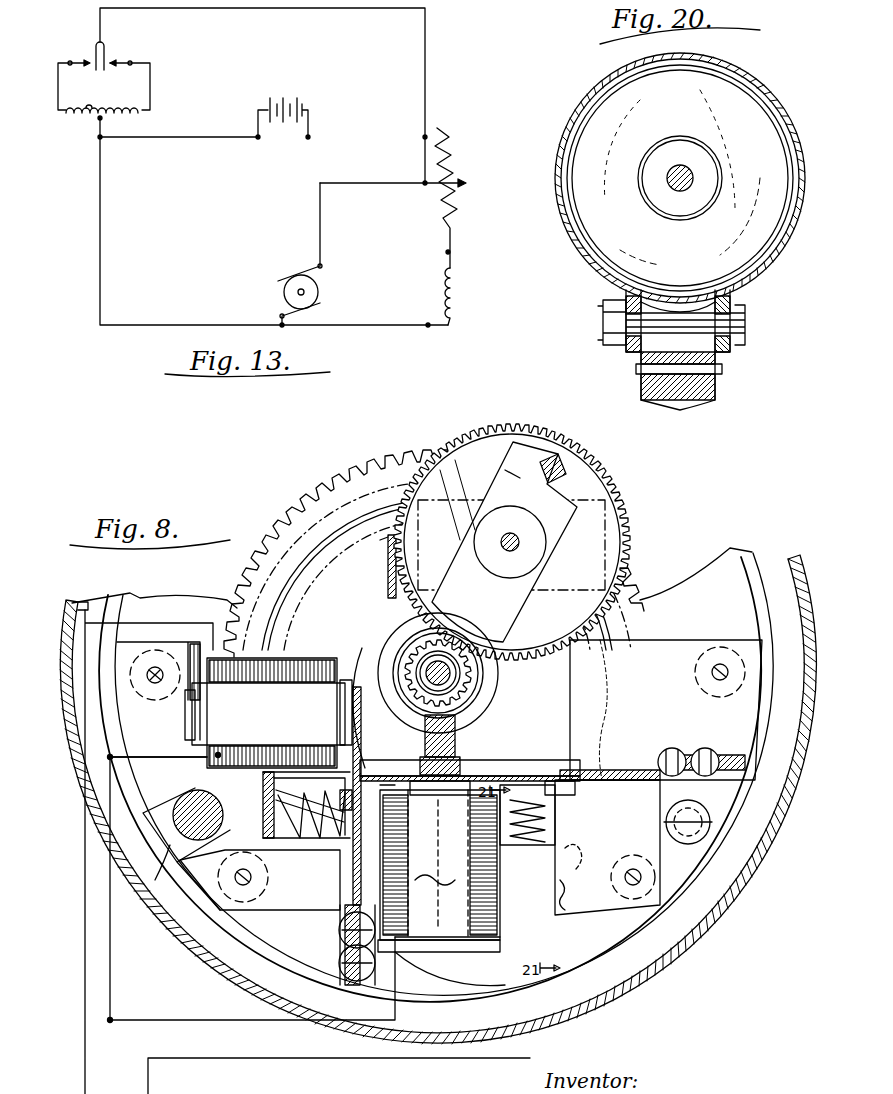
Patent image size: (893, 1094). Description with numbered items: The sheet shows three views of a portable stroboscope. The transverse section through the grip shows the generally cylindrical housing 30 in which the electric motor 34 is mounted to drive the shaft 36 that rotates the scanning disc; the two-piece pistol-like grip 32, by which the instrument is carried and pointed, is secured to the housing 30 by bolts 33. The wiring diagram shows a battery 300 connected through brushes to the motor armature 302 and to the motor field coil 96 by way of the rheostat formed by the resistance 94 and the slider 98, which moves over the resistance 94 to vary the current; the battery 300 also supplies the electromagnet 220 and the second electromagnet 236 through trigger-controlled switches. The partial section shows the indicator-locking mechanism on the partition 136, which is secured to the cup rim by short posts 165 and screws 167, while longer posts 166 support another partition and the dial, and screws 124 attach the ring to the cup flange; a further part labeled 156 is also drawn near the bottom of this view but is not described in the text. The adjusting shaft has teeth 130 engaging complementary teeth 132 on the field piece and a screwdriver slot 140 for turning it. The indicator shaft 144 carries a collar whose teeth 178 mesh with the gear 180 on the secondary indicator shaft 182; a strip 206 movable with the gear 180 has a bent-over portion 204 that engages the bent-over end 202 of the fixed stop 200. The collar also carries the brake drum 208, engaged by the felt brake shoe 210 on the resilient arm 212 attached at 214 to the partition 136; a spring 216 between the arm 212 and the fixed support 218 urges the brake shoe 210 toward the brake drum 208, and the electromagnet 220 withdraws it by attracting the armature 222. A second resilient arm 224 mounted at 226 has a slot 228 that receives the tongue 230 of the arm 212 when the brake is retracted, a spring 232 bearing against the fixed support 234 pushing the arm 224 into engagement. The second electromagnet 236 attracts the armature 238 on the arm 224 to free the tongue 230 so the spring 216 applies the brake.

In FIG. 13, the electromagnet 220 is at (103, 118).
In FIG. 8, the electromagnet 220 is at (438, 930).
In FIG. 13, the second electromagnet 236 is at (72, 128).
In FIG. 8, the second electromagnet 236 is at (250, 728).
In FIG. 13, the battery 300 is at (290, 104).
In FIG. 13, the resistance 94 is at (458, 160).
In FIG. 13, the slider 98 is at (445, 185).
In FIG. 13, the motor field coil 96 is at (455, 292).
In FIG. 13, the motor armature 302 is at (283, 292).
In FIG. 20, the housing 30 is at (790, 230).
In FIG. 20, the electric motor 34 is at (750, 130).
In FIG. 20, the shaft 36 is at (696, 180).
In FIG. 20, the bolts 33 is at (740, 312).
In FIG. 20, the pistol-like grip 32 is at (722, 392).
In FIG. 8, the teeth 130 is at (655, 985).
In FIG. 8, the screws 167 is at (160, 670).
In FIG. 8, the complementary teeth 132 is at (300, 470).
In FIG. 8, the fixed stop 200 is at (386, 583).
In FIG. 8, the gear 180 is at (630, 530).
In FIG. 8, the bent-over end 202 is at (480, 500).
In FIG. 8, the bent-over portion 204 is at (565, 474).
In FIG. 8, the strip 206 is at (507, 472).
In FIG. 8, the secondary indicator shaft 182 is at (520, 544).
In FIG. 8, the brake drum 208 is at (395, 628).
In FIG. 8, the tongue 230 is at (366, 652).
In FIG. 8, the teeth 178 is at (478, 697).
In FIG. 8, the indicator shaft 144 is at (450, 678).
In FIG. 8, the brake shoe 210 is at (472, 738).
In FIG. 8, the armature 222 is at (478, 778).
In FIG. 8, the mounting point of latch arm 226 is at (360, 1000).
In FIG. 8, the roller bearing 156 is at (380, 990).
In FIG. 8, the armature 238 is at (345, 700).
In FIG. 8, the slot 228 is at (262, 778).
In FIG. 8, the spring 232 is at (318, 838).
In FIG. 8, the fixed support 234 is at (236, 830).
In FIG. 8, the second resilient arm 224 is at (345, 885).
In FIG. 8, the longer posts 166 is at (158, 878).
In FIG. 8, the partition 136 is at (680, 712).
In FIG. 8, the attachment point of arm 214 is at (690, 744).
In FIG. 8, the resilient arm 212 is at (575, 772).
In FIG. 8, the screws 124 is at (712, 830).
In FIG. 8, the screwdriver slot 140 is at (580, 915).
In FIG. 8, the spring 216 is at (575, 812).
In FIG. 8, the short posts 165 is at (596, 850).
In FIG. 8, the fixed support 218 is at (572, 894).